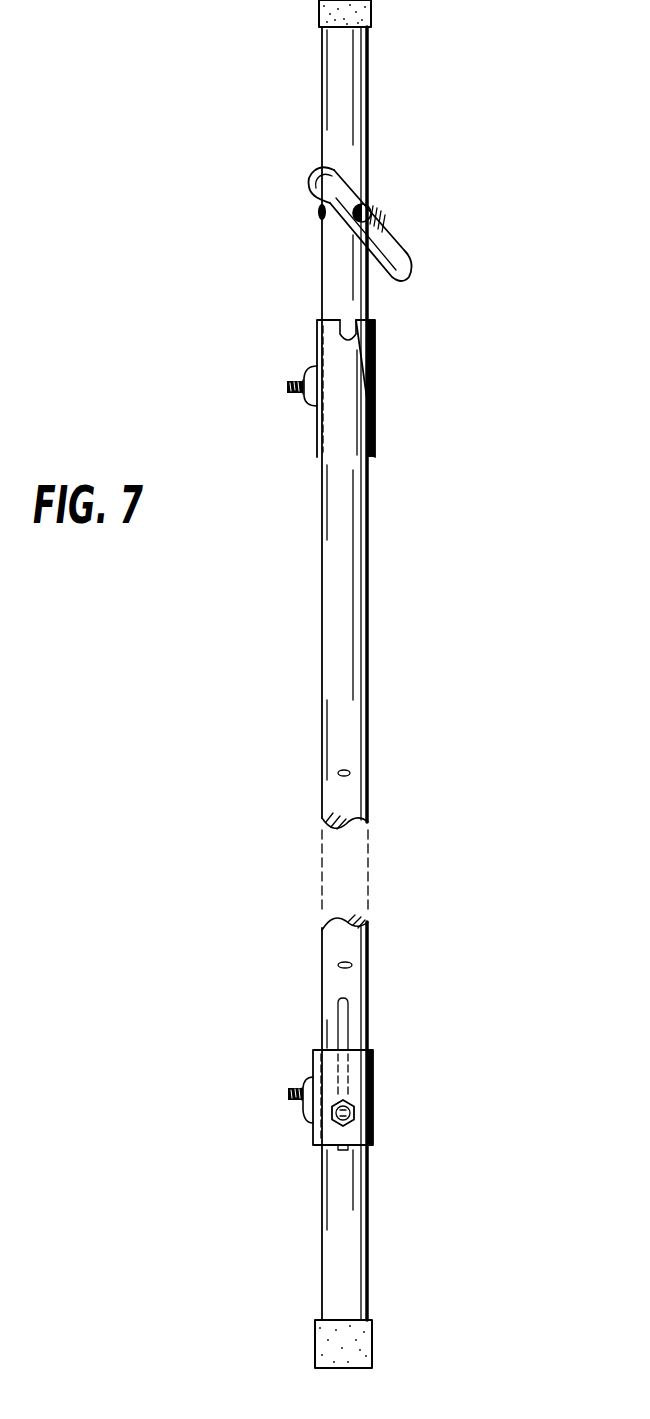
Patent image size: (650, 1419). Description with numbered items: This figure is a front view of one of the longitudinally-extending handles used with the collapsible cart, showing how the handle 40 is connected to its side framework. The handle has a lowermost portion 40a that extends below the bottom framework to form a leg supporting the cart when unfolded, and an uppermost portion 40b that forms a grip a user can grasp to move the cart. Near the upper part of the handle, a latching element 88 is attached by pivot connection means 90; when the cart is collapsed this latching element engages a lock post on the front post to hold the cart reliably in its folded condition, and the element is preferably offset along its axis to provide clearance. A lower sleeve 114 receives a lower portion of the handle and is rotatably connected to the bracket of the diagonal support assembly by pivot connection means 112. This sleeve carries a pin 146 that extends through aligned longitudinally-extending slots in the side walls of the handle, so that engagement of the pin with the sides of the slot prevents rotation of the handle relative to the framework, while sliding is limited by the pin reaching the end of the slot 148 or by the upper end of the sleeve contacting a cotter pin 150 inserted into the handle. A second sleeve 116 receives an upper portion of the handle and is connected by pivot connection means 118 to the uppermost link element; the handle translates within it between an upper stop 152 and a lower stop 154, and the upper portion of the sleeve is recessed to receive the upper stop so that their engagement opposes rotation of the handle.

The handle 40 is at (541, 154).
The lowermost portion of handle 40a is at (360, 1283).
The uppermost portion of handle 40b is at (372, 14).
The latching element 88 is at (412, 262).
The pivot connection means 90 is at (370, 212).
The pivot connection means 112 is at (287, 1096).
The sleeve 114 is at (360, 1085).
The second sleeve 116 is at (360, 437).
The pivot connection means 118 is at (286, 389).
The pin 146 is at (356, 1118).
The slot 148 is at (348, 1022).
The cotter pin 150 is at (352, 966).
The upper stop 152 is at (345, 334).
The lower stop 154 is at (352, 774).